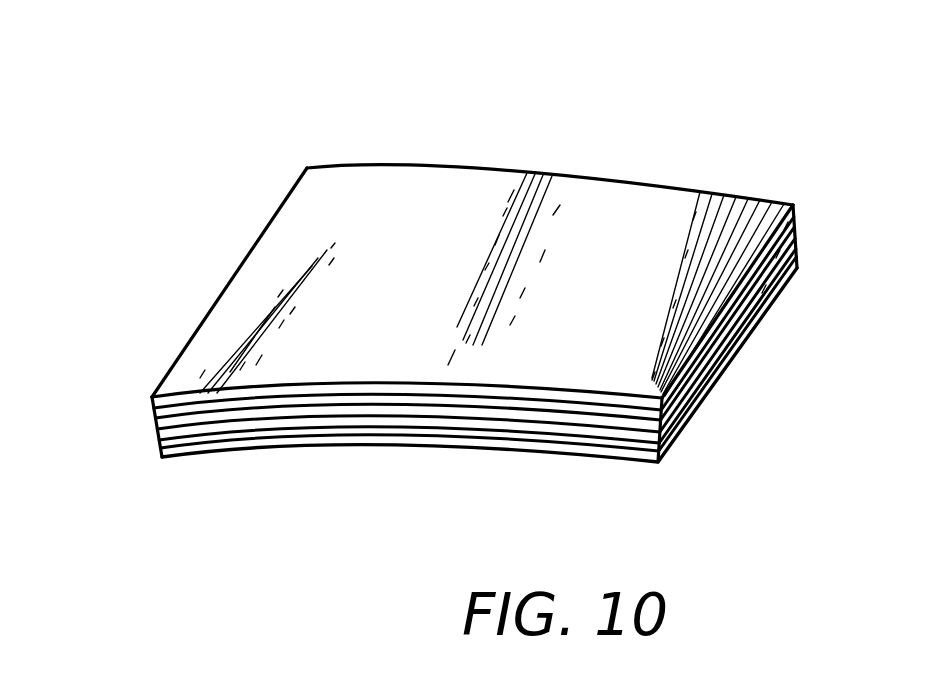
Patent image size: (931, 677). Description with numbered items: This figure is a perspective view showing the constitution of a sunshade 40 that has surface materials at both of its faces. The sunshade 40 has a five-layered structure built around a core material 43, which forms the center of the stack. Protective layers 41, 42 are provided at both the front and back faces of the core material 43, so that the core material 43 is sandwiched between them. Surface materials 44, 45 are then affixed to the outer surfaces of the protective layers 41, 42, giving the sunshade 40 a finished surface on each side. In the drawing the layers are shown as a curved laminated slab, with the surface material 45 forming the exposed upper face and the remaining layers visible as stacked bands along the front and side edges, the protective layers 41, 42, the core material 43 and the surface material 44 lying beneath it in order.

The sunshade 40 is at (545, 162).
The protective layer 41 is at (153, 414).
The protective layer 42 is at (158, 440).
The core material 43 is at (160, 424).
The surface material 44 is at (216, 446).
The surface material 45 is at (237, 312).